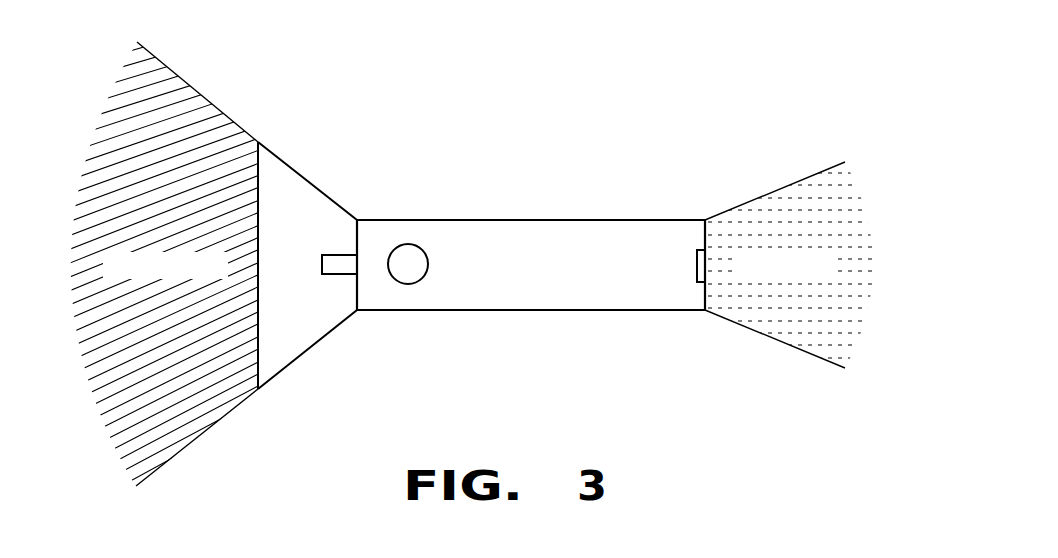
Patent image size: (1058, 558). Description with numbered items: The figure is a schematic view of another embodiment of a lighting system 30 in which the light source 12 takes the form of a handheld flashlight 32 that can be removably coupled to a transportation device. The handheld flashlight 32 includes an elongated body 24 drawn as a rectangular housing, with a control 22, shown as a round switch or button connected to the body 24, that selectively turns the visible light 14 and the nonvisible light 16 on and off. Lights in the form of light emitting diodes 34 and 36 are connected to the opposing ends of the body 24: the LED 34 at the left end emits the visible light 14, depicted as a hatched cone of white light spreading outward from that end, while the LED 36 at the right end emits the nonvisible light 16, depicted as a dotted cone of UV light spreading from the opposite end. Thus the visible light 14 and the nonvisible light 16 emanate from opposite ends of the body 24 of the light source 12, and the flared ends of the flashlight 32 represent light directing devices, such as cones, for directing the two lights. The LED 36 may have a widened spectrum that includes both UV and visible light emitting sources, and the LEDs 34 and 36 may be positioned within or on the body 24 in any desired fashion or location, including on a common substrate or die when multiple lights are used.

The light source 12 is at (471, 206).
The visible light 14 is at (221, 95).
The nonvisible light 16 is at (804, 165).
The control 22 is at (417, 298).
The body 24 is at (487, 325).
The lighting system 30 is at (636, 117).
The handheld flashlight 32 is at (547, 218).
The light emitting diode for visible light 34 is at (341, 242).
The light emitting diode for nonvisible light 36 is at (690, 292).